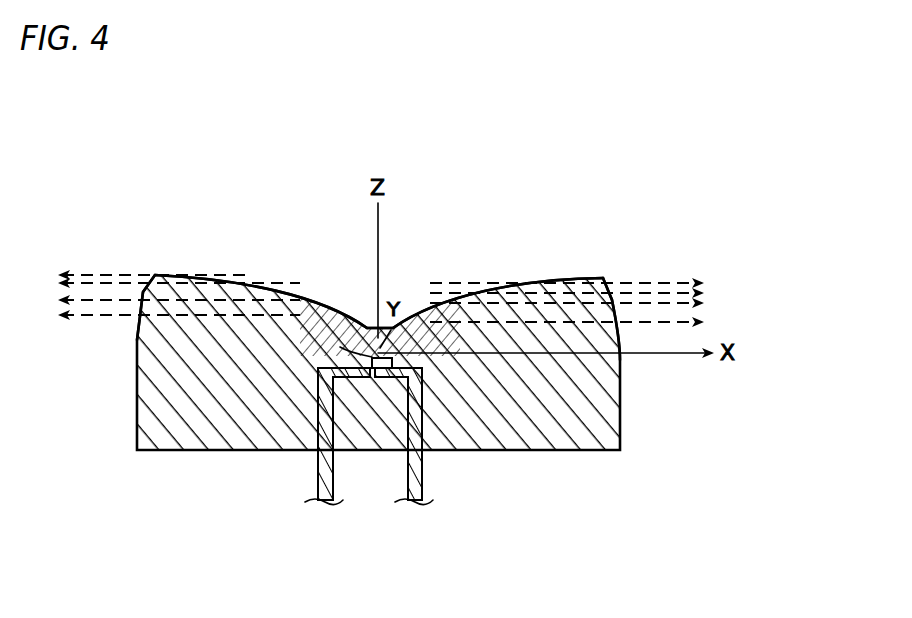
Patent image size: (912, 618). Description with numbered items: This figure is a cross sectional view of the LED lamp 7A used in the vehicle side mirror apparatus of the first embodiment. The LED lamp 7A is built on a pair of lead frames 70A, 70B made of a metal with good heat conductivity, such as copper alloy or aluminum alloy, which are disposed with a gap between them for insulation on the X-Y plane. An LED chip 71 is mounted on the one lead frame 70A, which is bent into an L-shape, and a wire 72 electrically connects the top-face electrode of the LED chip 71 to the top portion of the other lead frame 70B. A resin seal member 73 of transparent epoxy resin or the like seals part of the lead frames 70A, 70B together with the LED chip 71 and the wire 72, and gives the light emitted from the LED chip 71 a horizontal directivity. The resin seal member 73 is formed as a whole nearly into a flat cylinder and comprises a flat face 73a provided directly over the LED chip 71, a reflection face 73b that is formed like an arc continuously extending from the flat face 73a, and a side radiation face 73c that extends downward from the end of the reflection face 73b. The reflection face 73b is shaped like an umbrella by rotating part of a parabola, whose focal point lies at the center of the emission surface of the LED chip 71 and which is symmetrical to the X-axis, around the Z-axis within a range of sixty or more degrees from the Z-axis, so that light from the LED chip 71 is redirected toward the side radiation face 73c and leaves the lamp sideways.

The LED lamp 7A is at (441, 176).
The wire 72 is at (340, 347).
The resin seal member 73 is at (593, 418).
The flat face 73a is at (368, 322).
The reflection face 73b is at (217, 278).
The side radiation face 73c is at (143, 290).
The lead frame 70A is at (422, 466).
The lead frame 70B is at (318, 481).
The LED chip 71 is at (383, 368).